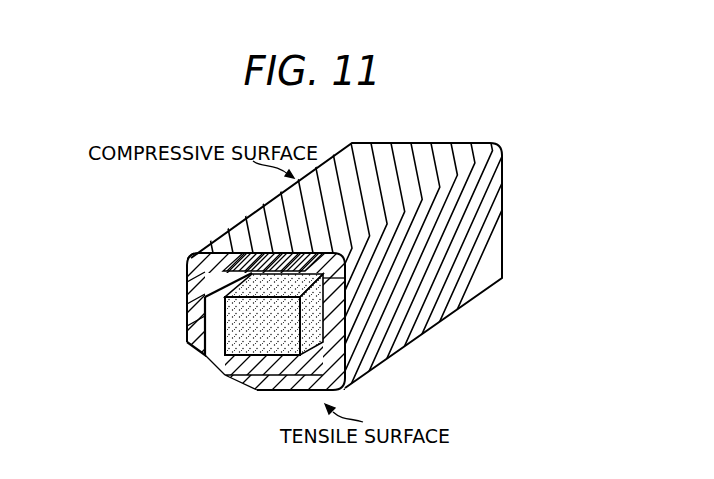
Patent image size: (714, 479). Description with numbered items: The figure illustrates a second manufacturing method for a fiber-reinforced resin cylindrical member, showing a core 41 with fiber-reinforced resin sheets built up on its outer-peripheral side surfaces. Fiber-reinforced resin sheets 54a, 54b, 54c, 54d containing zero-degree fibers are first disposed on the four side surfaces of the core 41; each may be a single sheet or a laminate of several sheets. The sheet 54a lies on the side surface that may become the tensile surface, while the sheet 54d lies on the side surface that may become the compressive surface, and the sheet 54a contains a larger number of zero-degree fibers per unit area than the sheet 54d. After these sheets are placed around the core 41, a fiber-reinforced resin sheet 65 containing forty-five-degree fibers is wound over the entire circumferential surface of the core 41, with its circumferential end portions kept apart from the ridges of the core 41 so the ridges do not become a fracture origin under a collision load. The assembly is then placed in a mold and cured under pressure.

The fiber-reinforced resin sheet including the 45° fibers 65 is at (433, 310).
The fiber-reinforced resin sheet 54a is at (202, 275).
The fiber-reinforced resin sheet 54b is at (332, 330).
The fiber-reinforced resin sheet 54c is at (195, 345).
The fiber-reinforced resin sheet 54d is at (250, 363).
The core 41 is at (235, 317).